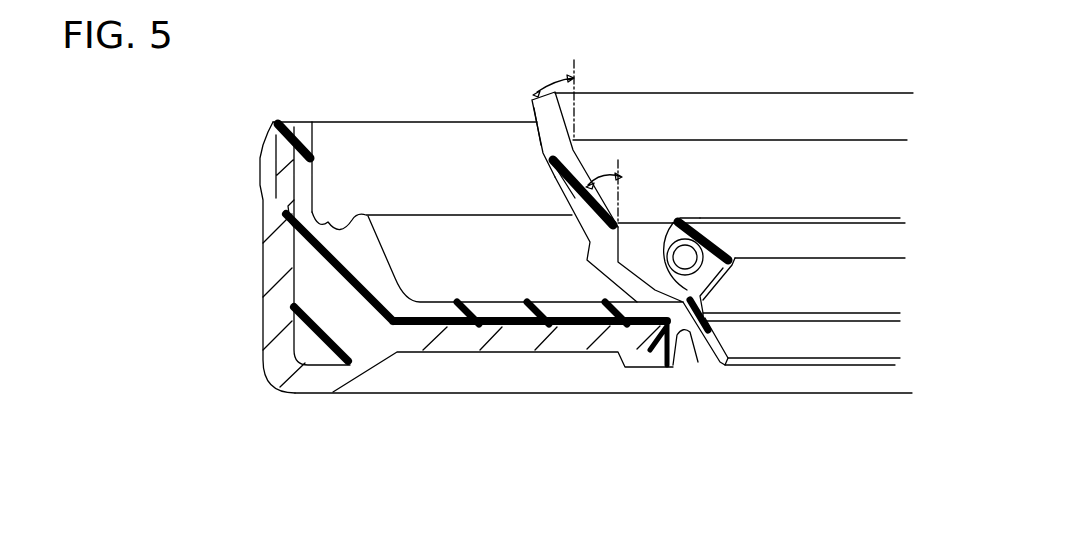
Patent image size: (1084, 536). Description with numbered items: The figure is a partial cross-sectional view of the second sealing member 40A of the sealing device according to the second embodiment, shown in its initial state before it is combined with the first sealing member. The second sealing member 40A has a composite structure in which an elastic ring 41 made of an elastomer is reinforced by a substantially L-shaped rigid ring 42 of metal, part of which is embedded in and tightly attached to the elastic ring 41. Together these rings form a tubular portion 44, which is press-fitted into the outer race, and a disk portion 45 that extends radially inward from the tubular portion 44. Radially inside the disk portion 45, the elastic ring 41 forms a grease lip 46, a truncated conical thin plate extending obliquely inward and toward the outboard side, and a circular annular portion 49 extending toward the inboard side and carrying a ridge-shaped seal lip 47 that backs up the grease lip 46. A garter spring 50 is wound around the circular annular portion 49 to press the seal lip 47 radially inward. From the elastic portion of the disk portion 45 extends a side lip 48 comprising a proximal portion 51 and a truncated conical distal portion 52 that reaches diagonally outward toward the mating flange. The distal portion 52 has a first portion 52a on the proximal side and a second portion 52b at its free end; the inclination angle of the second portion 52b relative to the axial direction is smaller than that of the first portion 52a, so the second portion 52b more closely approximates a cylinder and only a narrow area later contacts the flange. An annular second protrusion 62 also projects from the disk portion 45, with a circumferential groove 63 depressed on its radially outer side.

The second sealing member 40A is at (398, 440).
The elastic ring 41 is at (523, 317).
The rigid ring 42 is at (277, 302).
The tubular portion 44 is at (313, 267).
The disk portion 45 is at (477, 330).
The grease lip 46 is at (710, 355).
The seal lip 47 is at (738, 255).
The side lip 48 is at (583, 157).
The circular annular portion 49 is at (710, 298).
The garter spring 50 is at (672, 240).
The proximal portion 51 is at (595, 258).
The distal portion 52 is at (590, 162).
The first portion 52a is at (570, 193).
The second portion 52b is at (537, 130).
The second protrusion 62 is at (300, 240).
The circumferential groove 63 is at (300, 212).